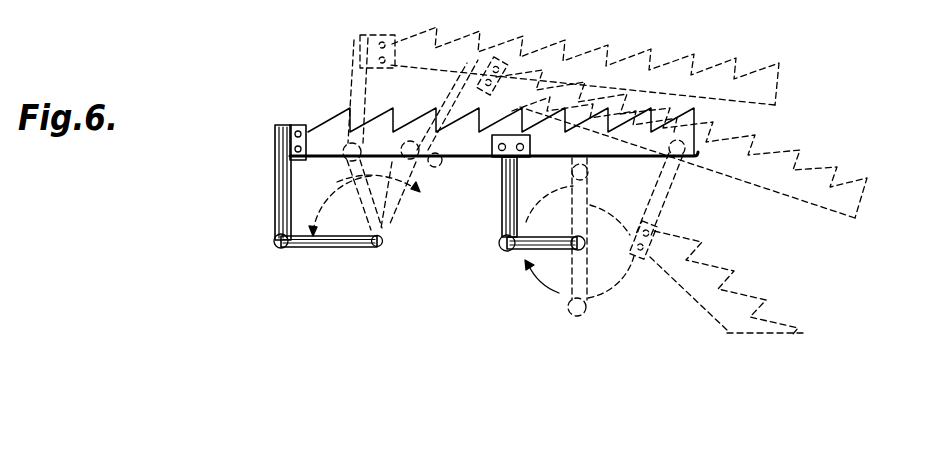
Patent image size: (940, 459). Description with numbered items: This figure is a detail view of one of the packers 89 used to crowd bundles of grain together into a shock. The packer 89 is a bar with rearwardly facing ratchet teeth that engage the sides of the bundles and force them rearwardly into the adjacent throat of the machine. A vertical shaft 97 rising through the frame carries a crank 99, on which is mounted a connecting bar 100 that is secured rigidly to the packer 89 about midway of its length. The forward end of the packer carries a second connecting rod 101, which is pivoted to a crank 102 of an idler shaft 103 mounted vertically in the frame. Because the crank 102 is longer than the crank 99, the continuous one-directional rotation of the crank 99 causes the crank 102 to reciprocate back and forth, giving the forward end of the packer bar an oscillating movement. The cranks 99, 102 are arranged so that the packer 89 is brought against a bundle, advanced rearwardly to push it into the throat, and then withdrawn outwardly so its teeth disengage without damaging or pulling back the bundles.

The packer 89 is at (330, 121).
The vertical shaft 97 is at (574, 249).
The crank 99 is at (545, 236).
The connecting bar 100 is at (503, 207).
The second connecting rod 101 is at (287, 173).
The crank 102 is at (345, 184).
The idler shaft 103 is at (379, 247).